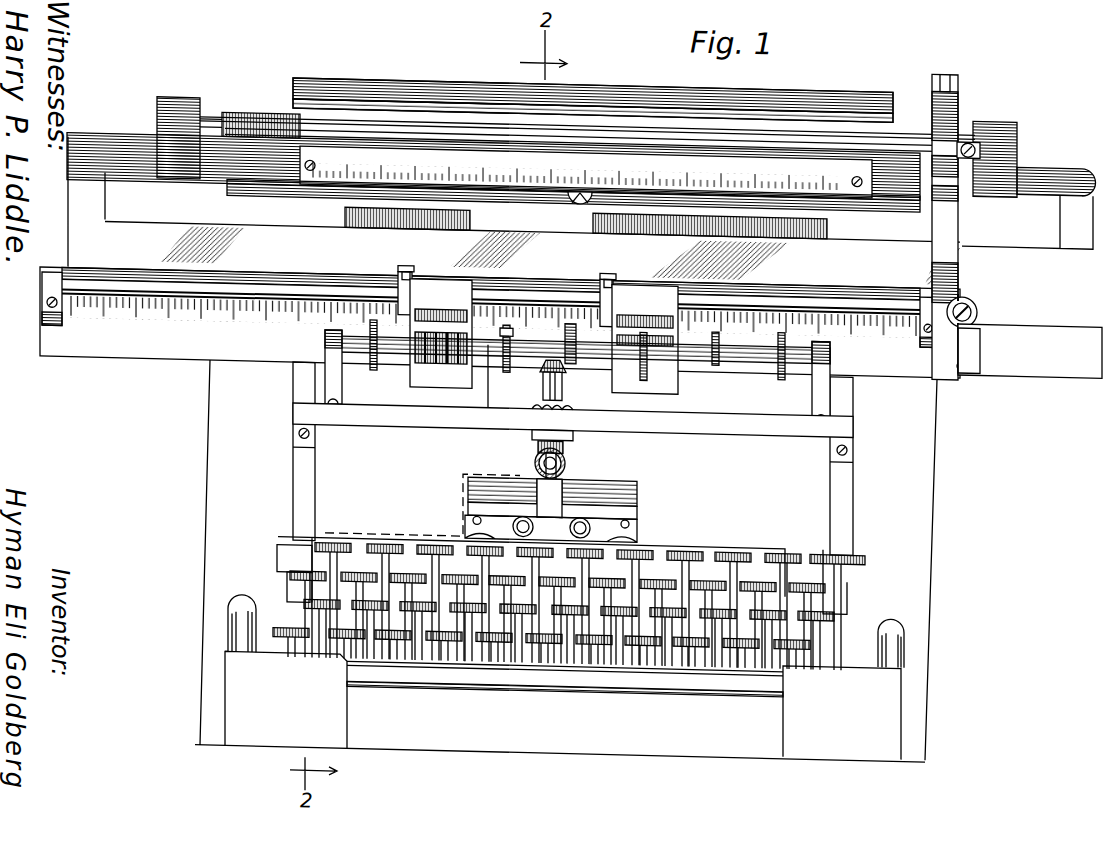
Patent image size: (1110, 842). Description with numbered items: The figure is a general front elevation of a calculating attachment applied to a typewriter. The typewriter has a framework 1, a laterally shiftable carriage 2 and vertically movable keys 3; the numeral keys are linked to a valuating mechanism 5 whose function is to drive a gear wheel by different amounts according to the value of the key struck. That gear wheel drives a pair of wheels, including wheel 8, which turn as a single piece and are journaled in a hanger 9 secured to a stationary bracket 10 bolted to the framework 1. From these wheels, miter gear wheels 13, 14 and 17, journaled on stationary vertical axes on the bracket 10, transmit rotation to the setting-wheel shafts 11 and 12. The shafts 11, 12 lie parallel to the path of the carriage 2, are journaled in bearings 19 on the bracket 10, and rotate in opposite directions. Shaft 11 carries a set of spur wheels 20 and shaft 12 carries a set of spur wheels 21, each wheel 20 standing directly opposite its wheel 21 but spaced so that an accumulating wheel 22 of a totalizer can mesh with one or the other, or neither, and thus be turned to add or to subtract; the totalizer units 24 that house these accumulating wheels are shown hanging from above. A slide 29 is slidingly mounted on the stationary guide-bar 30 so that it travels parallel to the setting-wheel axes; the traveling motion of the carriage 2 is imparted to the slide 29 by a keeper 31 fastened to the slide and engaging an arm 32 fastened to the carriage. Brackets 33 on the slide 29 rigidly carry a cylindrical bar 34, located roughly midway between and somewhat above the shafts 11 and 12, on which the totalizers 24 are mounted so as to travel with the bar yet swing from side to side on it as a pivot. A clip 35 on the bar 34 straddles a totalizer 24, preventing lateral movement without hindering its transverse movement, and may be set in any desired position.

The framework 1 is at (222, 440).
The carriage 2 is at (240, 112).
The keys 3 is at (388, 537).
The valuating mechanism 5 is at (630, 480).
The wheel 8 is at (565, 448).
The hanger 9 is at (545, 477).
The stationary bracket 10 is at (608, 404).
The setting-wheel shaft 11 is at (752, 343).
The setting-wheel shaft 12 is at (488, 338).
The miter gear wheel 13 is at (563, 436).
The miter gear wheel 14 is at (563, 352).
The miter gear wheel 17 is at (565, 330).
The bearings 19 is at (325, 358).
The spur wheels 20 is at (375, 352).
The spur wheels 21 is at (508, 326).
The accumulating wheels 22 is at (544, 360).
The tabulator stop block 24 is at (544, 335).
The slide 29 is at (125, 340).
The stationary guide-bar 30 is at (1038, 340).
The keeper 31 is at (978, 332).
The arm 32 is at (968, 212).
The brackets 33 is at (44, 295).
The bar 34 is at (120, 280).
The clip 35 is at (402, 267).